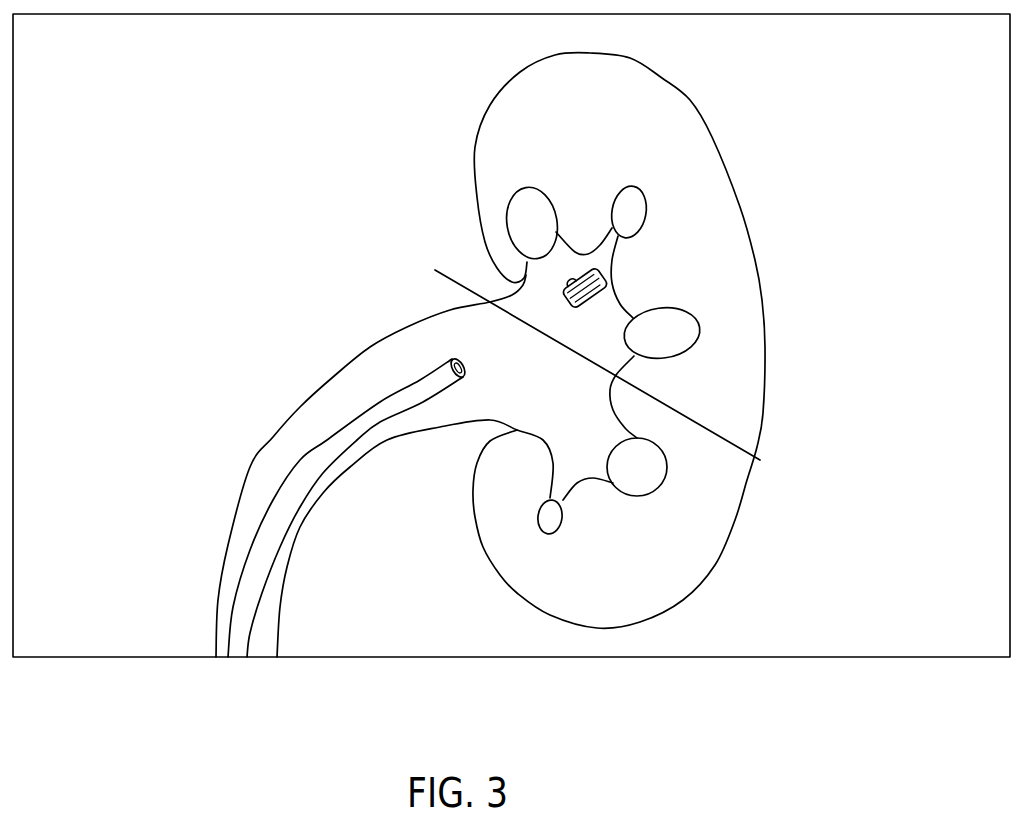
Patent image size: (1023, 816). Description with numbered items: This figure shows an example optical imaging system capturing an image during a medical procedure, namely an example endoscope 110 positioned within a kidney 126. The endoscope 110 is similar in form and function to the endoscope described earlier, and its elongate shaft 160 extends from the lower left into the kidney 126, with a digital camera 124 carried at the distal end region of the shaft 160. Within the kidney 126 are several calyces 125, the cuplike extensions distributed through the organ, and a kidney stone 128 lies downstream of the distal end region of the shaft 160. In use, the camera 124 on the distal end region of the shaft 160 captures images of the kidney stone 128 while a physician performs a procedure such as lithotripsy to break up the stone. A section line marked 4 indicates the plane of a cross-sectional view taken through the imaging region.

The endoscope 110 is at (298, 450).
The digital camera 124 is at (453, 358).
The calyces 125 is at (522, 203).
The kidney 126 is at (685, 82).
The kidney stone 128 is at (605, 282).
The elongate shaft 160 is at (420, 380).
The section line 4- 4 is at (435, 270).